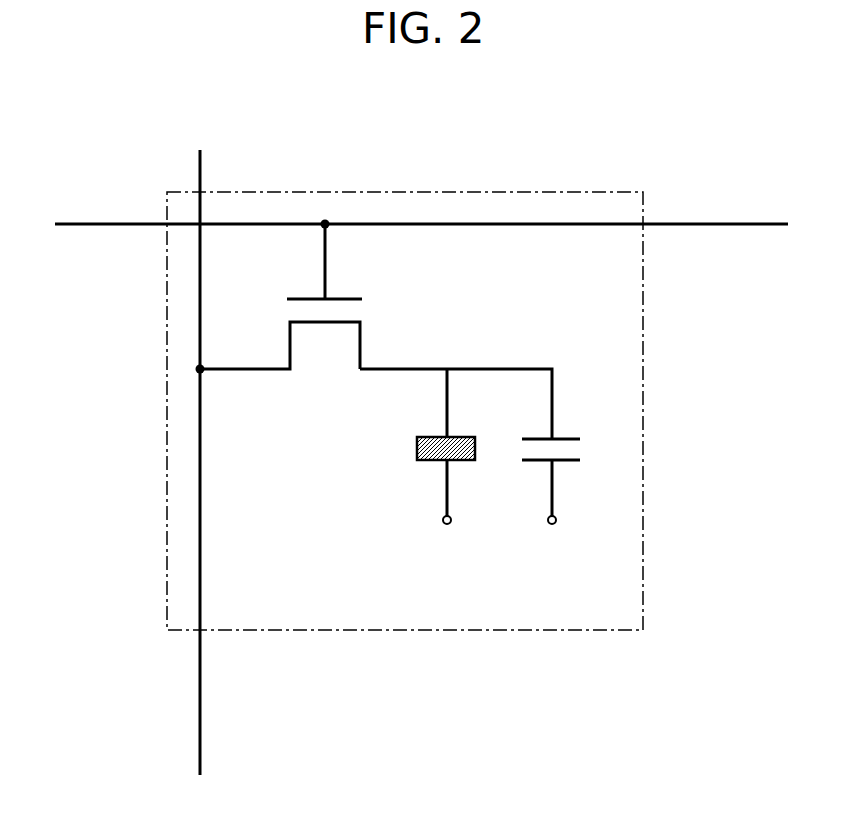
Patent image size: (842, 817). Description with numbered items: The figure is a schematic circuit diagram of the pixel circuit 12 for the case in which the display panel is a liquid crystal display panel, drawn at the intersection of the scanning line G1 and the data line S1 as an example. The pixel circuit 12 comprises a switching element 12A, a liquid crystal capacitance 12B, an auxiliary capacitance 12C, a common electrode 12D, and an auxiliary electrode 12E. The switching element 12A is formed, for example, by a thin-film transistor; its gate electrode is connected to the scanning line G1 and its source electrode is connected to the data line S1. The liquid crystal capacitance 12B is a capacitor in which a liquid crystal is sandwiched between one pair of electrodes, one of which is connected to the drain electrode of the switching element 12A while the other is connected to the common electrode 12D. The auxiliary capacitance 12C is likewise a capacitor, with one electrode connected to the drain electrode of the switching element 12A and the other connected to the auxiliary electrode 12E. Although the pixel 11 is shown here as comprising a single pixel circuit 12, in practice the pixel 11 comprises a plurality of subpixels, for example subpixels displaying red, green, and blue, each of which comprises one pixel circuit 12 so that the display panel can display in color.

The pixel 11 is at (580, 192).
The pixel circuit 12 is at (615, 299).
The switching element 12A is at (287, 340).
The liquid crystal capacitance 12B is at (430, 437).
The auxiliary capacitance 12C is at (567, 436).
The common electrode 12D is at (445, 525).
The auxiliary electrode 12E is at (554, 525).
The scanning line G1 is at (421, 244).
The data line S1 is at (221, 461).